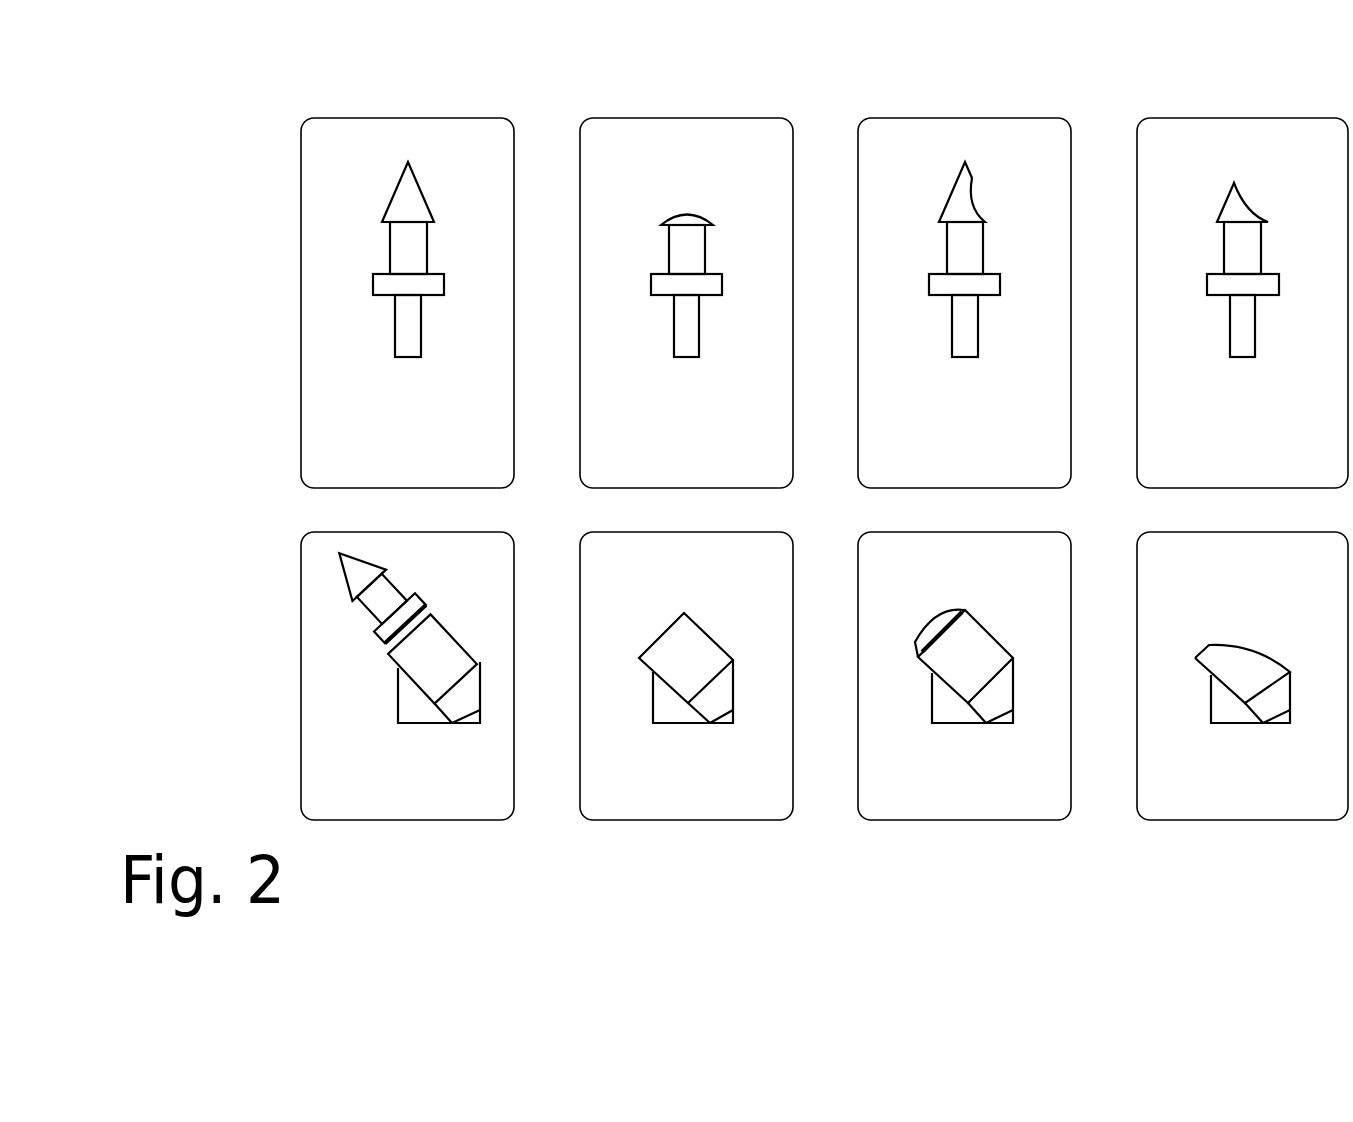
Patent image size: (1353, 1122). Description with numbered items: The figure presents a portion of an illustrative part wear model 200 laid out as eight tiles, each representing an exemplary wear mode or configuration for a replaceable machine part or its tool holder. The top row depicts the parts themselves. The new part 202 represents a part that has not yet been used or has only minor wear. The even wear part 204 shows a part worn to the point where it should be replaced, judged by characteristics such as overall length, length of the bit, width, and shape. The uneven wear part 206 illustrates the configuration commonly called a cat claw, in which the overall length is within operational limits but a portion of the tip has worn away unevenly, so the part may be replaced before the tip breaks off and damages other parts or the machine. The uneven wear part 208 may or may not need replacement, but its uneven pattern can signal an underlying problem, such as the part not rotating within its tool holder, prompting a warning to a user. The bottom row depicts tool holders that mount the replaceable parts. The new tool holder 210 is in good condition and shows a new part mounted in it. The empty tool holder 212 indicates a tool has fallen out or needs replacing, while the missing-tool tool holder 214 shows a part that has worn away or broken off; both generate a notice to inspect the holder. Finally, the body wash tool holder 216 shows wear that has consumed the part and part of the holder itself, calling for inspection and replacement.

The part wear model 200 is at (226, 69).
The new part 202 is at (427, 476).
The even wear part 204 is at (706, 476).
The uneven wear part 206 is at (984, 476).
The uneven wear part 208 is at (1262, 476).
The new tool holder 210 is at (427, 806).
The empty tool holder 212 is at (706, 806).
The missing-tool tool holder 214 is at (984, 806).
The body wash tool holder 216 is at (1262, 806).